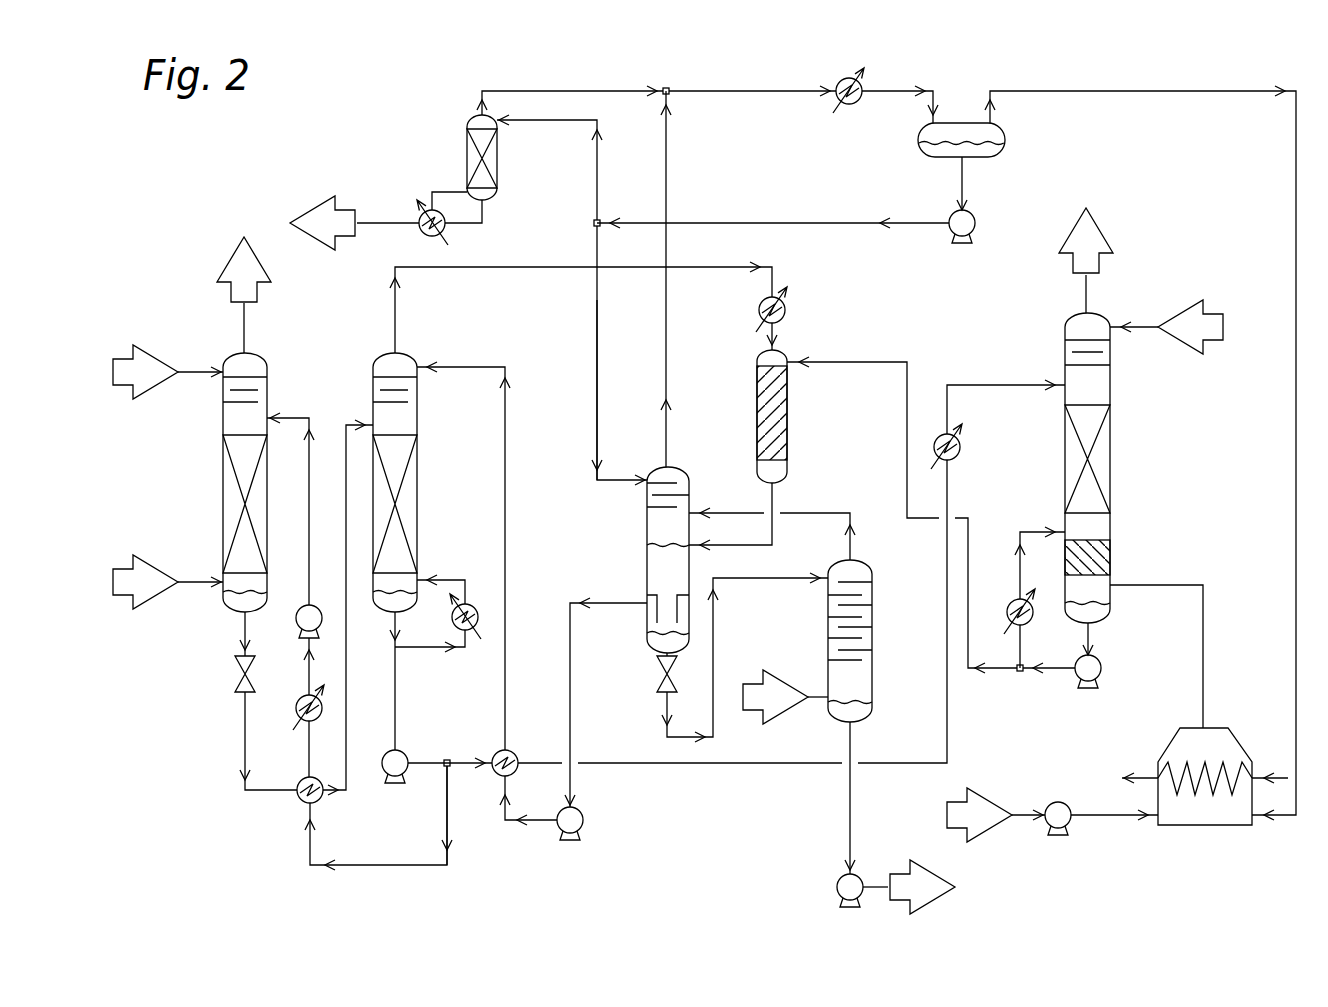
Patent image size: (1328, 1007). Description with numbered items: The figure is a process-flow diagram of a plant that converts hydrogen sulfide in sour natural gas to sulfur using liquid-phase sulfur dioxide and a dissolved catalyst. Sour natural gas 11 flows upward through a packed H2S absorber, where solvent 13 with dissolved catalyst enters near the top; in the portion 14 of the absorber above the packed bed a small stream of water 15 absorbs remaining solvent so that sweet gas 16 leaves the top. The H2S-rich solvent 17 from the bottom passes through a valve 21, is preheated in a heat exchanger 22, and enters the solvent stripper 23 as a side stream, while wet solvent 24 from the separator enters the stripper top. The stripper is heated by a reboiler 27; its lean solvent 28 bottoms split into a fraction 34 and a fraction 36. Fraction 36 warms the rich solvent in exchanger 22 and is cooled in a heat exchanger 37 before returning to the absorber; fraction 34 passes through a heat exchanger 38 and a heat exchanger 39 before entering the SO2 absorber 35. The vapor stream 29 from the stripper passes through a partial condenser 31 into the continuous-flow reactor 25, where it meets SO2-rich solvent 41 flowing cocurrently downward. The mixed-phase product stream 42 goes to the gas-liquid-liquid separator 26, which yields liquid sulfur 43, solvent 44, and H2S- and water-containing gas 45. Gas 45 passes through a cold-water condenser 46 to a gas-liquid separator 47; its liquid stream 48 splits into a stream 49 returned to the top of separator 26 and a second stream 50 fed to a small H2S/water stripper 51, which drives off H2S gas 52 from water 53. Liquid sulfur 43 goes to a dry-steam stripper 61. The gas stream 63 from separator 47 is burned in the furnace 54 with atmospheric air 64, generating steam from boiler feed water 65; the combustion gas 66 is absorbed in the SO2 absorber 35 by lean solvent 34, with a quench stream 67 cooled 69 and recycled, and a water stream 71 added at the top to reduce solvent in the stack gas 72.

The sour natural gas 11 is at (160, 570).
The solvent 13 is at (277, 353).
The portion of the absorber above the packed bed 14 is at (295, 393).
The stream of water 15 is at (160, 358).
The sweet gas 16 is at (225, 263).
The H2S-rich solvent 17 is at (240, 630).
The valve 21 is at (240, 698).
The heat exchanger 22 is at (300, 802).
The solvent stripper 23 is at (418, 490).
The wet solvent 24 is at (457, 362).
The continuous-flow reactor 25 is at (790, 420).
The gas-liquid-liquid separator 26 is at (645, 530).
The reboiler 27 is at (465, 603).
The lean solvent 28 is at (397, 705).
The vapor stream 29 is at (395, 330).
The partial condenser 31 is at (788, 308).
The lean solvent fraction 34 is at (458, 758).
The SO2 absorber 35 is at (1112, 458).
The lean solvent fraction 36 is at (447, 805).
The heat exchanger 37 is at (297, 718).
The heat exchanger 38 is at (512, 752).
The heat exchanger 39 is at (962, 447).
The SO2-rich solvent 41 is at (855, 360).
The mixed-phase product stream 42 is at (778, 505).
The liquid sulfur 43 is at (662, 662).
The solvent 44 is at (618, 600).
The H2S- and water-containing gas 45 is at (680, 358).
The cold-water condenser 46 is at (850, 108).
The gas-liquid separator 47 is at (1005, 133).
The liquid stream 48 is at (975, 193).
The stream 49 is at (596, 342).
The second stream 50 is at (597, 178).
The H2S/water stripper 51 is at (463, 145).
The H2S gas 52 is at (525, 85).
The water 53 is at (317, 205).
The furnace 54 is at (1175, 750).
The dry-steam stripper 61 is at (872, 625).
The gas stream 63 is at (1083, 88).
The atmospheric air 64 is at (995, 803).
The boiler feed water 65 is at (1288, 778).
The combustion gas 66 is at (1207, 660).
The quench stream 67 is at (1018, 560).
The cooler 69 is at (1010, 600).
The stream of water 71 is at (1183, 300).
The stack gas 72 is at (1100, 228).